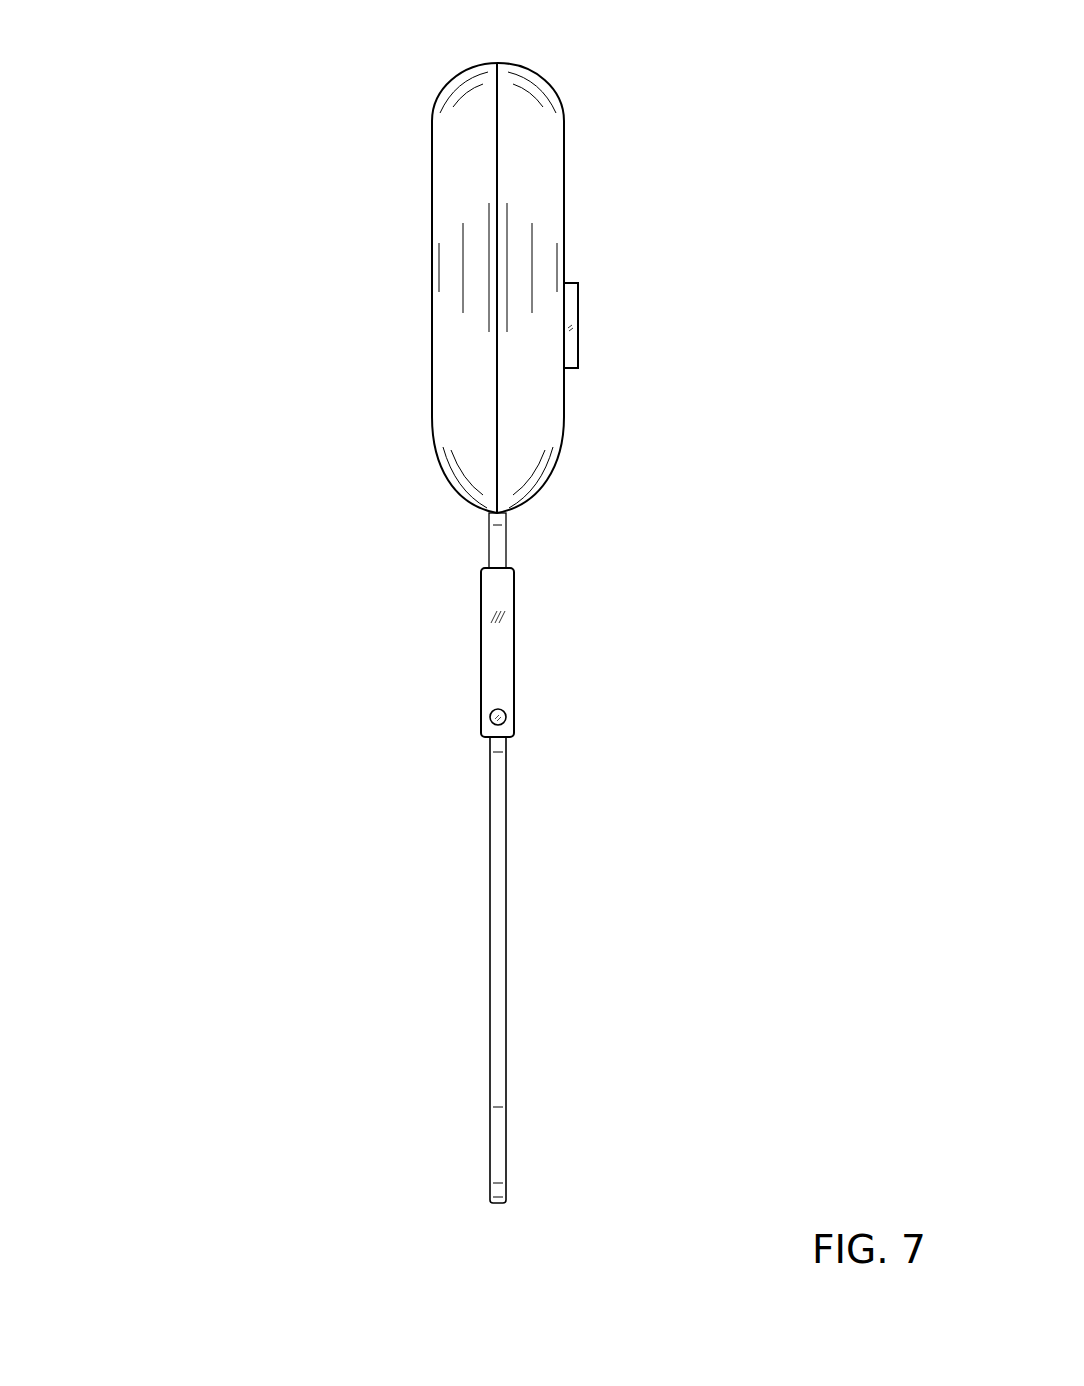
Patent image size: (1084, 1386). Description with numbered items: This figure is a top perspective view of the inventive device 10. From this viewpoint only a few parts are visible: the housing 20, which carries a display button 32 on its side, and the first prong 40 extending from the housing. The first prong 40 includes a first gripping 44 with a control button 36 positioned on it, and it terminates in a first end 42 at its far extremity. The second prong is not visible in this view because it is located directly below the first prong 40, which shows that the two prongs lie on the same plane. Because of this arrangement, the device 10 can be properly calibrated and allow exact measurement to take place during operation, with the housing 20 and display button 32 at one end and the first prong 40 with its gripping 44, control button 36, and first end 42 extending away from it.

The inventive device 10 is at (178, 125).
The housing 20 is at (432, 278).
The display button 32 is at (578, 329).
The control button 36 is at (490, 712).
The first prong 40 is at (506, 867).
The first end 42 is at (500, 1203).
The first gripping 44 is at (502, 673).